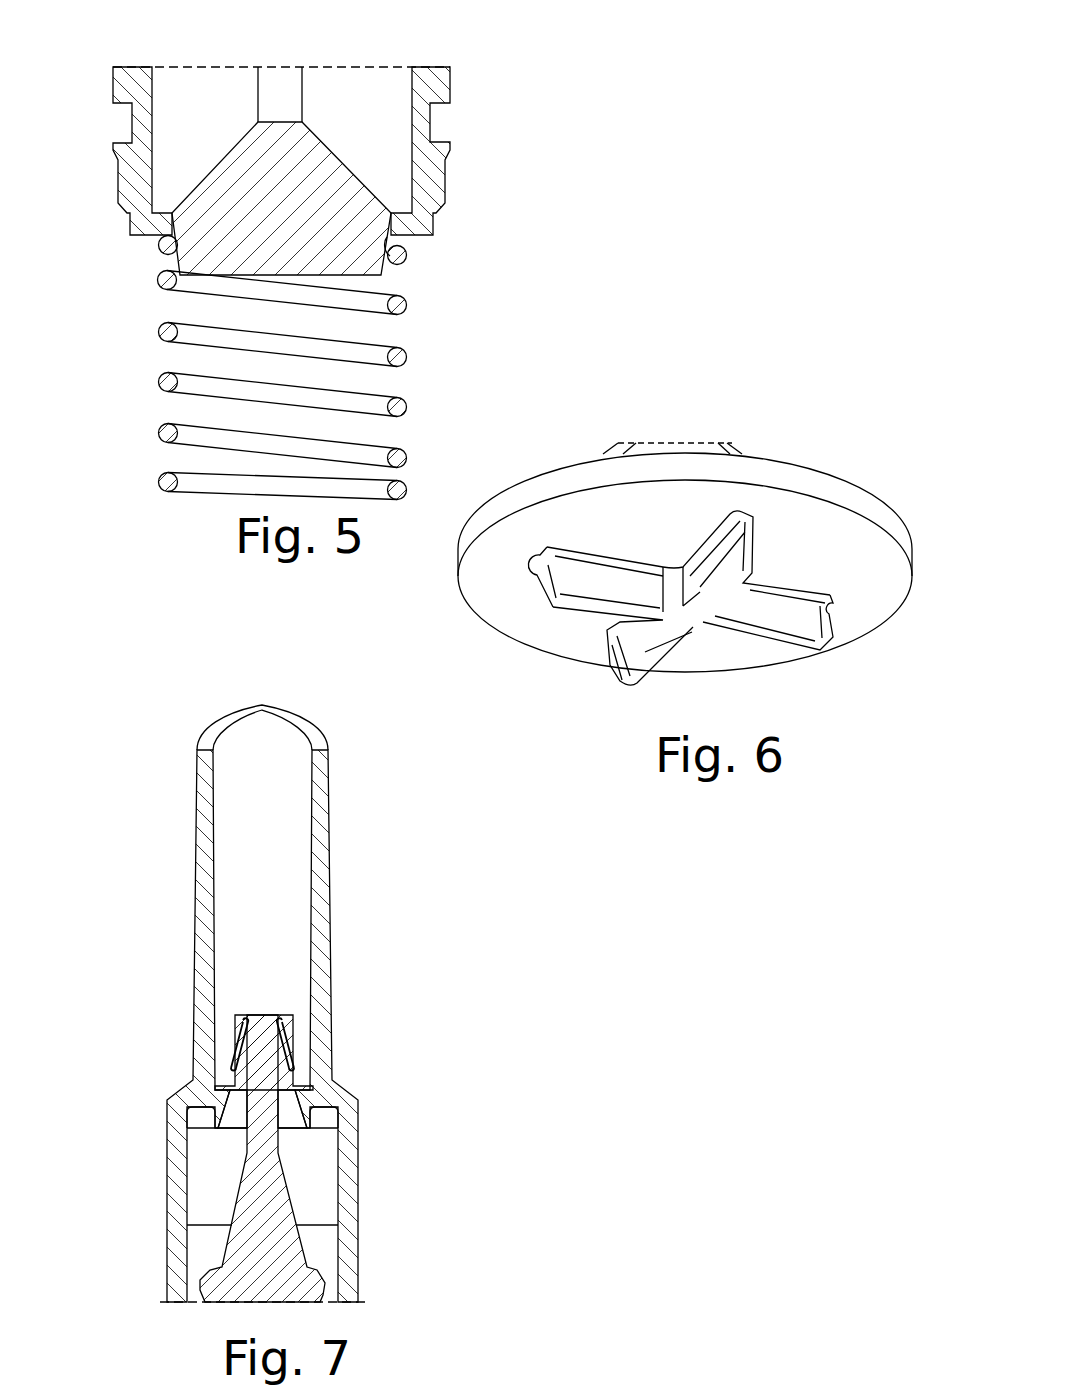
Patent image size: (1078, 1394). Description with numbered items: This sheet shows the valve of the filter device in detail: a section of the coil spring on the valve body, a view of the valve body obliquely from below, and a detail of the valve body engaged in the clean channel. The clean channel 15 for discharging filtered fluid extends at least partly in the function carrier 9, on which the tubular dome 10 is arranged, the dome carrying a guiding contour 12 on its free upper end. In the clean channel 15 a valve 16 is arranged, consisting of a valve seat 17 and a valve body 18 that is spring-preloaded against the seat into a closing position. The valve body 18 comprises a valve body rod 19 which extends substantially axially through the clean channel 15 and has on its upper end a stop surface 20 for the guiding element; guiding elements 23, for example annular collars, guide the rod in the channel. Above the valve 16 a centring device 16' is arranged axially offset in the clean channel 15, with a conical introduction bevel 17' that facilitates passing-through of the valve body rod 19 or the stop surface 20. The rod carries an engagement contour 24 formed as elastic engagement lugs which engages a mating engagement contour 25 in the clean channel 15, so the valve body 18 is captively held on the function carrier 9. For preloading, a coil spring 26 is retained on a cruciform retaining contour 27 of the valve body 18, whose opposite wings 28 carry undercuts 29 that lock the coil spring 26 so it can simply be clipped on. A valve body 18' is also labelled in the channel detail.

In FIG. 5, the function carrier 9 is at (470, 80).
In FIG. 7, the function carrier 9 is at (345, 873).
In FIG. 5, the tubular dome 10 is at (432, 160).
In FIG. 7, the tubular dome 10 is at (320, 813).
In FIG. 7, the guiding contour 12 is at (313, 733).
In FIG. 5, the clean channel 15 is at (370, 100).
In FIG. 7, the clean channel 15 is at (260, 865).
In FIG. 5, the valve 16 is at (90, 324).
In FIG. 6, the valve 16 is at (747, 354).
In FIG. 7, the centring device 16' is at (372, 1182).
In FIG. 5, the valve seat 17 is at (97, 244).
In FIG. 7, the conical introduction bevel 17' is at (328, 1132).
In FIG. 5, the valve body 18 is at (119, 274).
In FIG. 6, the valve body 18 is at (685, 531).
In FIG. 7, the valve disc 18' is at (313, 1223).
In FIG. 5, the valve body rod 19 is at (288, 95).
In FIG. 7, the valve body rod 19 is at (260, 1133).
In FIG. 7, the stop surface 20 is at (258, 1012).
In FIG. 7, the guiding elements 23 is at (310, 1287).
In FIG. 7, the engagement contour 24 is at (297, 1035).
In FIG. 7, the mating engagement contour 25 is at (223, 1087).
In FIG. 5, the coil spring 26 is at (160, 432).
In FIG. 5, the retaining contour 27 is at (340, 295).
In FIG. 6, the retaining contour 27 is at (598, 680).
In FIG. 5, the wings 28 is at (393, 266).
In FIG. 6, the wings 28 is at (620, 582).
In FIG. 5, the undercuts 29 is at (160, 243).
In FIG. 6, the undercuts 29 is at (540, 558).